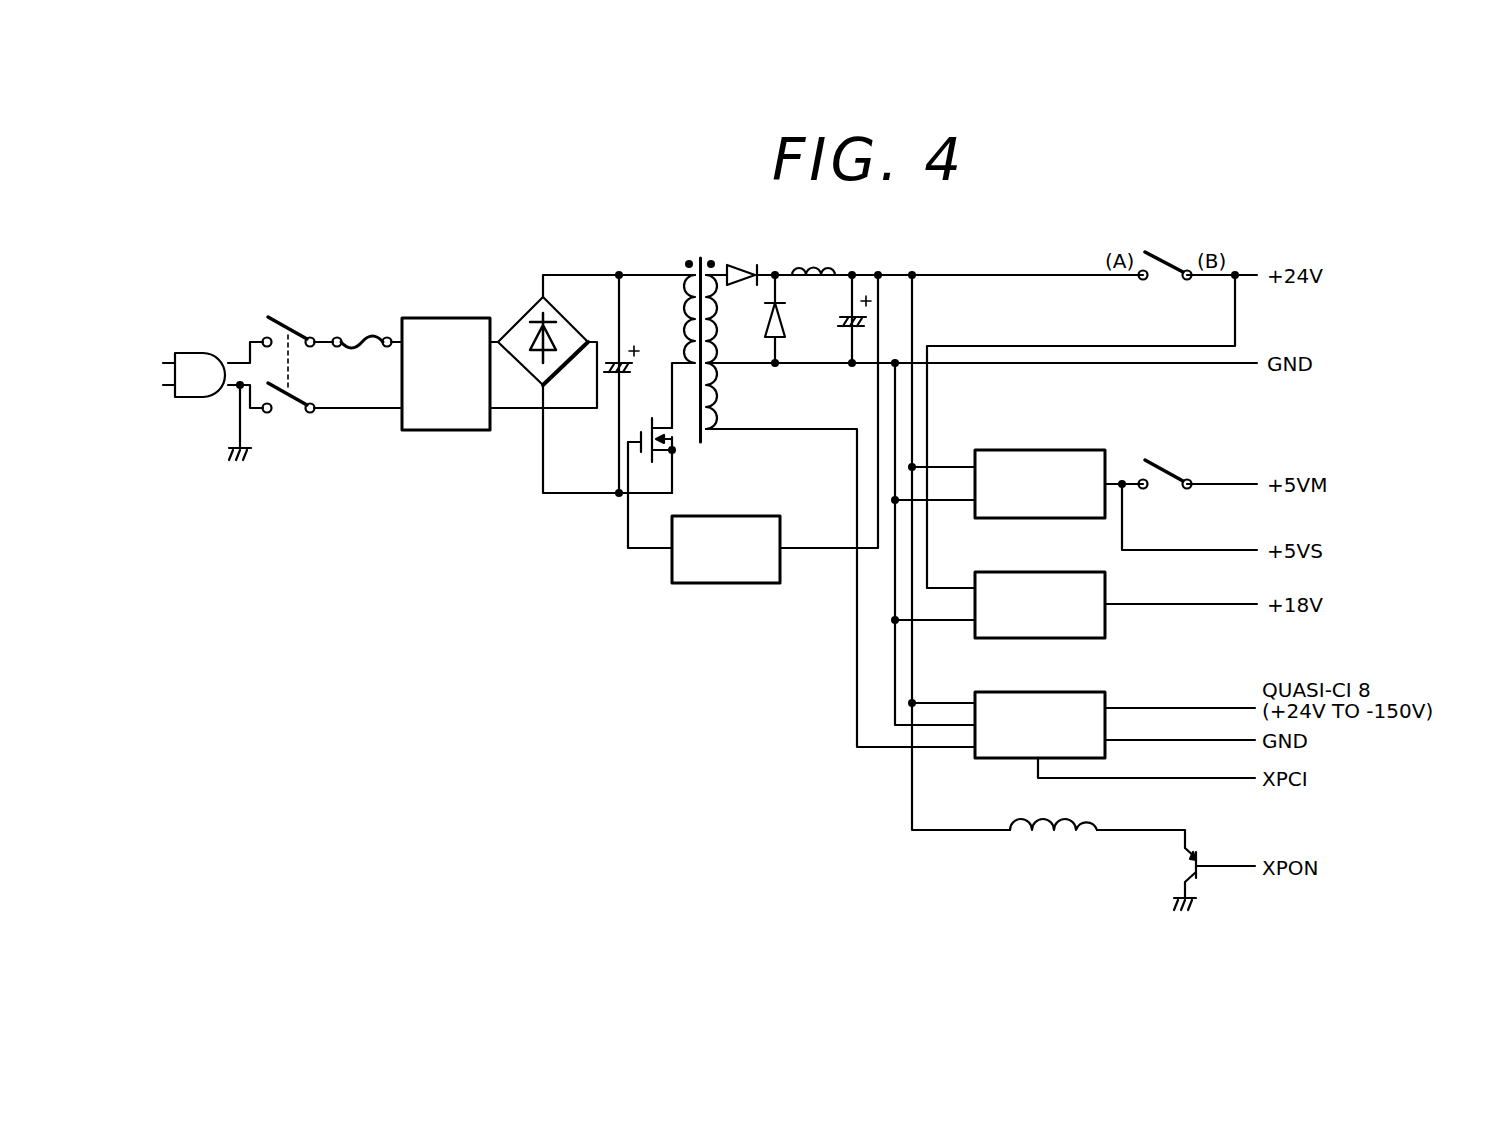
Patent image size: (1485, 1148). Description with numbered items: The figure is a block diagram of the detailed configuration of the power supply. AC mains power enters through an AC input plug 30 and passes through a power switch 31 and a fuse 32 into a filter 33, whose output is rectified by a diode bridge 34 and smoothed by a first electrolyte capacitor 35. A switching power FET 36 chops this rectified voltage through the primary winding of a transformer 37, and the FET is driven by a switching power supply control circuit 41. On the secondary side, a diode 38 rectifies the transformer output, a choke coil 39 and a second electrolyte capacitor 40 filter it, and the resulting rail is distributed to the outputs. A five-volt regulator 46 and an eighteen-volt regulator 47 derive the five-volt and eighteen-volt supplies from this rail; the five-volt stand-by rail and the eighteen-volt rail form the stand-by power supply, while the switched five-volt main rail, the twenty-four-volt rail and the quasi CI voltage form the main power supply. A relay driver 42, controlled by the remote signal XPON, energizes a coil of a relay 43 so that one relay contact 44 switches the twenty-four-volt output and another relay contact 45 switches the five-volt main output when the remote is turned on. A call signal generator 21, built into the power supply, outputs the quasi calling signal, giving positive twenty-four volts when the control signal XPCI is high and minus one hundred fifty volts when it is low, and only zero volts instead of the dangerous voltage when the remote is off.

The call signal generator 21 is at (1063, 692).
The AC input plug 30 is at (193, 352).
The power switch 31 is at (284, 330).
The fuse 32 is at (361, 340).
The filter 33 is at (462, 318).
The diode bridge 34 is at (573, 320).
The electrolyte capacitor 35 is at (633, 372).
The switching power FET 36 is at (672, 437).
The transformer 37 is at (702, 262).
The diode 38 is at (742, 285).
The choke coil 39 is at (828, 265).
The electrolyte capacitor 40 is at (843, 320).
The switching power supply control circuit 41 is at (752, 515).
The relay driver 42 is at (1192, 855).
The relay coil 43 is at (1095, 826).
The relay contact 44 is at (1152, 251).
The relay contact 45 is at (1152, 460).
The 5V regulator 46 is at (1072, 450).
The 18V regulator 47 is at (1065, 572).